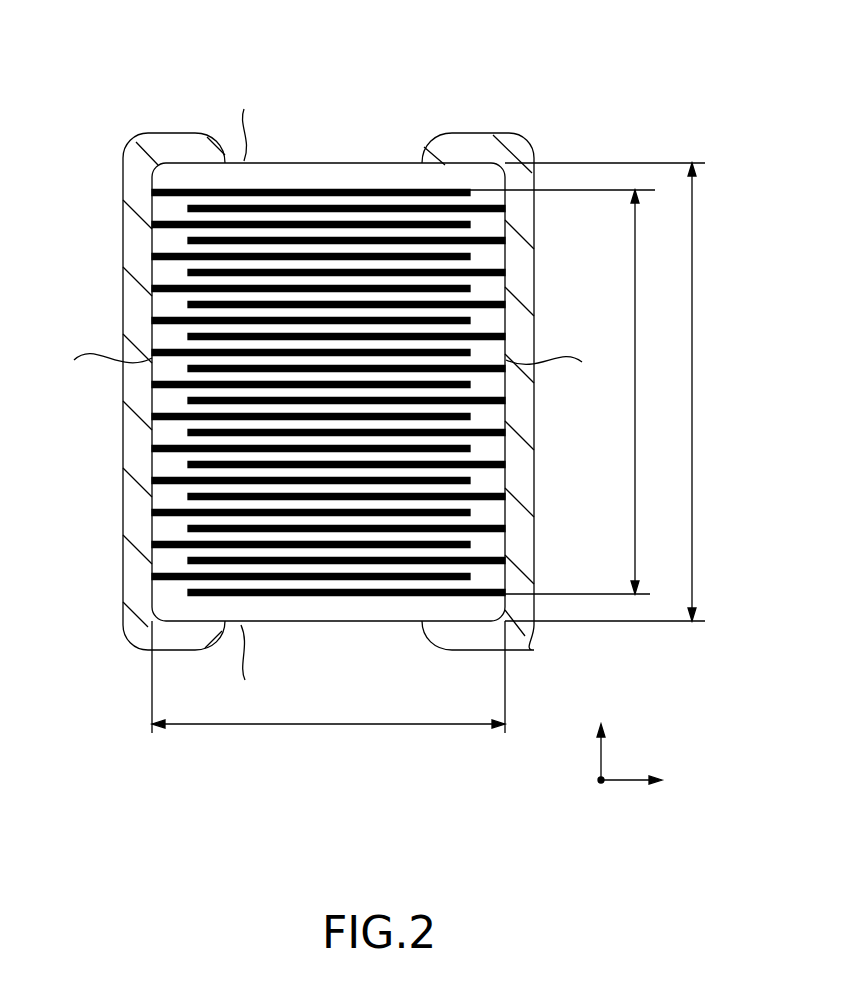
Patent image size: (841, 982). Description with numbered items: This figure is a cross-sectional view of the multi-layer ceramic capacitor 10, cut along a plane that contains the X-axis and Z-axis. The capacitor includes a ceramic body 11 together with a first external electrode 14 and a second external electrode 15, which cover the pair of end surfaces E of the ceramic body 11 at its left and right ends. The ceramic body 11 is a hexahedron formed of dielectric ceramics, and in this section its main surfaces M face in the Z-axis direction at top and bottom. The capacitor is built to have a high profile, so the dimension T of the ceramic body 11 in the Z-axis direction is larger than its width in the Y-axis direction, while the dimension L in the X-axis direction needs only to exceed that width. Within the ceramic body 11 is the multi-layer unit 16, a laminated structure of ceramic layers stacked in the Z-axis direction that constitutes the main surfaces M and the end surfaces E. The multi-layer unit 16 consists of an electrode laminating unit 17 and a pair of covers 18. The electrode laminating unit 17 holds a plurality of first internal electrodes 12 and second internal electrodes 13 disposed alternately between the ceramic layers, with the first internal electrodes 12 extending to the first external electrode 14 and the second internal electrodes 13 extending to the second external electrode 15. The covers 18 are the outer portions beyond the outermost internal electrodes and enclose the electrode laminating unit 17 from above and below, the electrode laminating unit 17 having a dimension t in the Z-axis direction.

The multi-layer ceramic capacitor 10 is at (129, 98).
The ceramic body 11 is at (298, 82).
The multi-layer unit 16 is at (328, 397).
The first internal electrodes 12 is at (292, 386).
The second internal electrodes 13 is at (412, 210).
The first external electrode 14 is at (124, 413).
The second external electrode 15 is at (522, 410).
The electrode laminating unit 17 is at (328, 397).
The covers 18 is at (338, 170).